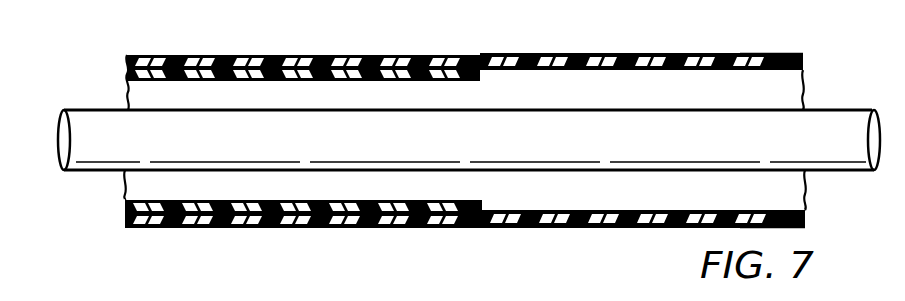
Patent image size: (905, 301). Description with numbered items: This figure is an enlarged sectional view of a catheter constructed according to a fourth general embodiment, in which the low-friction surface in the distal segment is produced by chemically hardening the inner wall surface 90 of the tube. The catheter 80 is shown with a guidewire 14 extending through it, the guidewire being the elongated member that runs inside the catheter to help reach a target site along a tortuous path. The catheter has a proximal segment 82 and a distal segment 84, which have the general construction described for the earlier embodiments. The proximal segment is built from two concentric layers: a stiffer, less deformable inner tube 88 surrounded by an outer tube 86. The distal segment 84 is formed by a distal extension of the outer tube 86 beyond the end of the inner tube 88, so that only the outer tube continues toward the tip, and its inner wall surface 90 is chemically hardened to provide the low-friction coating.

The guidewire 14 is at (460, 137).
The catheter 80 is at (504, 55).
The proximal segment 82 is at (228, 56).
The distal segment 84 is at (716, 52).
The outer tube 86 is at (676, 220).
The inner tube 88 is at (335, 222).
The inner wall surface 90 is at (643, 202).